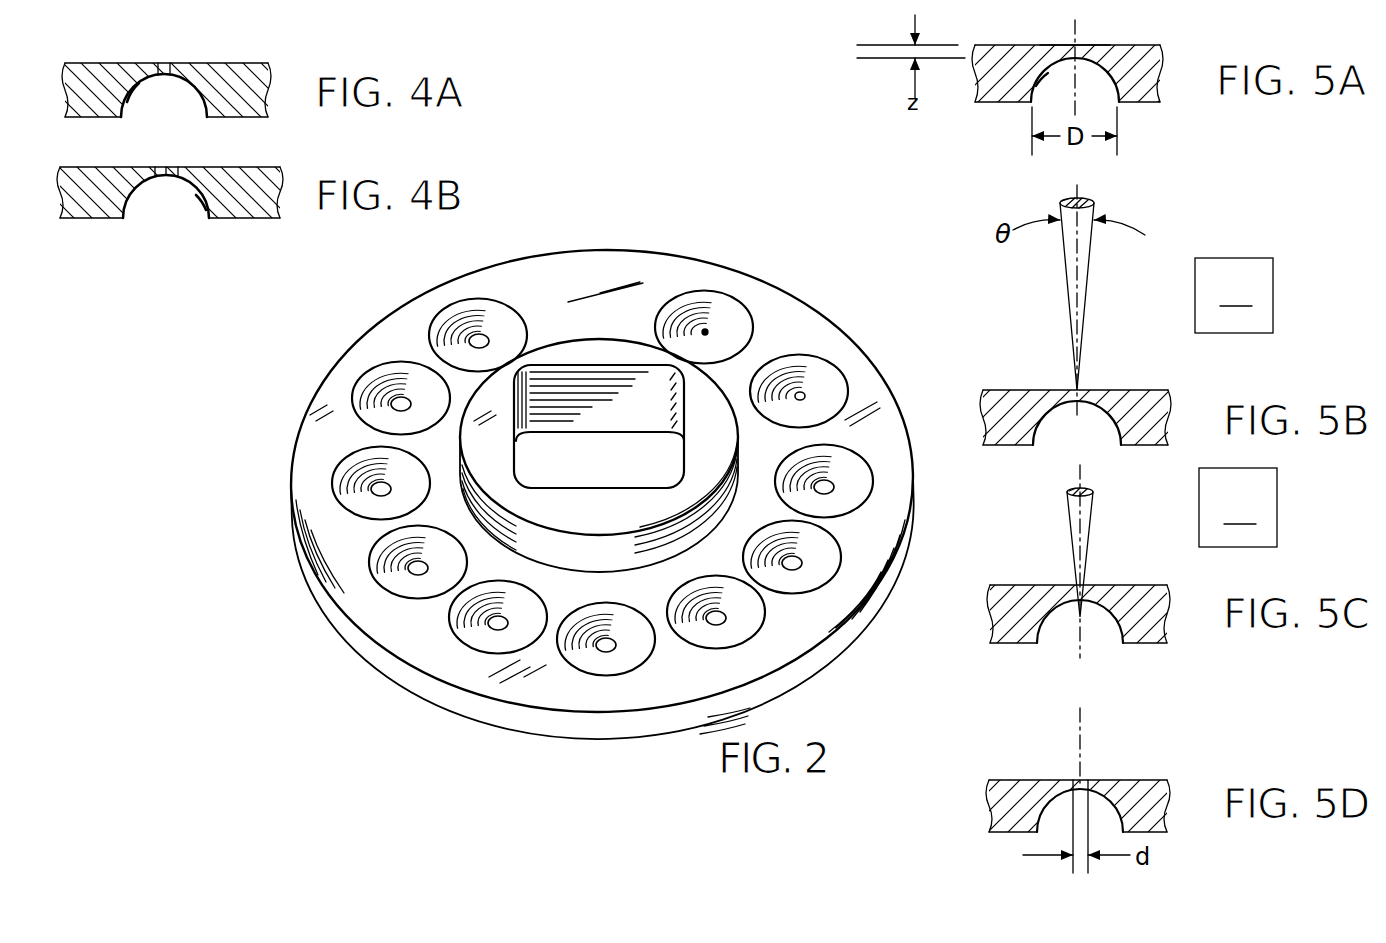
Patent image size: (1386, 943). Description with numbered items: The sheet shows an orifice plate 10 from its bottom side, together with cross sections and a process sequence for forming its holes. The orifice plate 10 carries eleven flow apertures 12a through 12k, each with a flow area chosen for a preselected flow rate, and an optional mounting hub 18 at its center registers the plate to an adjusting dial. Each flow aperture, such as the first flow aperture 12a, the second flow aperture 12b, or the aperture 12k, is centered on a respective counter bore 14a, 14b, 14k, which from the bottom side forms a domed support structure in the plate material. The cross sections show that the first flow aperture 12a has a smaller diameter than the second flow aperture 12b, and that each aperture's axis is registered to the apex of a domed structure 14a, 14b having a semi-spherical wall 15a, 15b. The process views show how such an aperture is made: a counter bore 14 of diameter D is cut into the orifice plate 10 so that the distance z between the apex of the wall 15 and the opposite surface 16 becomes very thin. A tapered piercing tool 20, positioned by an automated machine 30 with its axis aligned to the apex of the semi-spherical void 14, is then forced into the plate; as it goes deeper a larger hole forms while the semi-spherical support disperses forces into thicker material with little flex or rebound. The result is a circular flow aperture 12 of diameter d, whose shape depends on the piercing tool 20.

In FIG. 4A, the orifice plate 10 is at (247, 62).
In FIG. 4B, the orifice plate 10 is at (250, 167).
In FIG. 2, the orifice plate 10 is at (680, 224).
In FIG. 5A, the orifice plate 10 is at (1158, 65).
In FIG. 5B, the orifice plate 10 is at (1075, 417).
In FIG. 5C, the orifice plate 10 is at (1078, 614).
In FIG. 5D, the orifice plate 10 is at (1078, 806).
In FIG. 5D, the flow aperture 12 is at (1084, 778).
In FIG. 4A, the first flow aperture 12a is at (161, 64).
In FIG. 2, the first flow aperture 12a is at (707, 332).
In FIG. 4B, the second flow aperture 12b is at (163, 168).
In FIG. 2, the second flow aperture 12b is at (805, 396).
In FIG. 2, the flow aperture 12k is at (470, 340).
In FIG. 5A, the counter bore 14 is at (1087, 82).
In FIG. 4A, the domed structure 14a is at (163, 99).
In FIG. 2, the domed structure 14a is at (740, 336).
In FIG. 4B, the domed structure 14b is at (163, 200).
In FIG. 2, the domed structure 14b is at (836, 400).
In FIG. 2, the counter bore 14k is at (503, 325).
In FIG. 5A, the wall 15 is at (1047, 92).
In FIG. 4A, the semi-spherical wall 15a is at (136, 93).
In FIG. 4B, the semi-spherical wall 15b is at (200, 203).
In FIG. 5A, the area of material 16 is at (1090, 40).
In FIG. 2, the mounting hub 18 is at (615, 347).
In FIG. 5B, the piercing tool 20 is at (1086, 336).
In FIG. 5C, the piercing tool 20 is at (1080, 552).
In FIG. 5B, the automated machine 30 is at (1089, 293).
In FIG. 5C, the automated machine 30 is at (1094, 510).